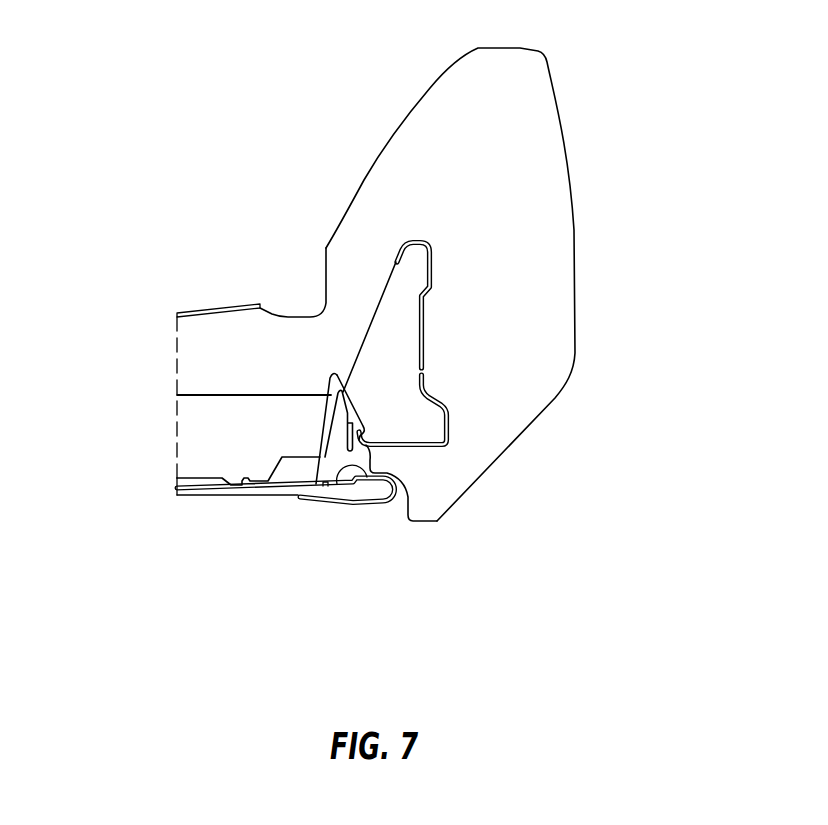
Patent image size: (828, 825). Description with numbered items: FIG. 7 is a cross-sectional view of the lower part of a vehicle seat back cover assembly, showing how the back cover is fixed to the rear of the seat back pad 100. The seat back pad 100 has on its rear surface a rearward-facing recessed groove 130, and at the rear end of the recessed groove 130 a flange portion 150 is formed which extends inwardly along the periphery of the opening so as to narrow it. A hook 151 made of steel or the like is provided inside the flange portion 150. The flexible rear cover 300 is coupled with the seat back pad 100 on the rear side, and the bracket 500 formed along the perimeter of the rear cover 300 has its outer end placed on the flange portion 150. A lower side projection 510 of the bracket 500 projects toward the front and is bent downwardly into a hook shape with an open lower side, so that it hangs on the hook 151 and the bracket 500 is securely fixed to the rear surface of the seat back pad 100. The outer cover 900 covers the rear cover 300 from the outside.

The seat back pad 100 is at (543, 177).
The recessed groove 130 is at (203, 395).
The flange portion 150 is at (433, 495).
The hook 151 is at (422, 333).
The rear cover 300 is at (200, 478).
The bracket 500 is at (366, 478).
The projection 510 is at (356, 405).
The outer cover 900 is at (246, 494).